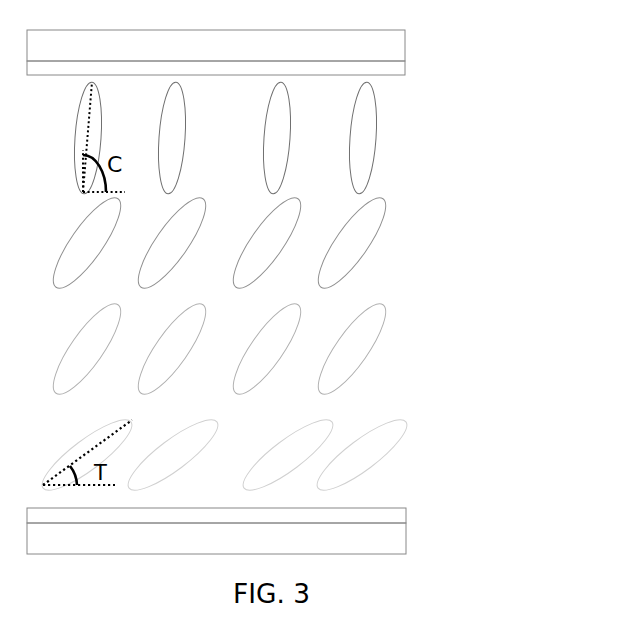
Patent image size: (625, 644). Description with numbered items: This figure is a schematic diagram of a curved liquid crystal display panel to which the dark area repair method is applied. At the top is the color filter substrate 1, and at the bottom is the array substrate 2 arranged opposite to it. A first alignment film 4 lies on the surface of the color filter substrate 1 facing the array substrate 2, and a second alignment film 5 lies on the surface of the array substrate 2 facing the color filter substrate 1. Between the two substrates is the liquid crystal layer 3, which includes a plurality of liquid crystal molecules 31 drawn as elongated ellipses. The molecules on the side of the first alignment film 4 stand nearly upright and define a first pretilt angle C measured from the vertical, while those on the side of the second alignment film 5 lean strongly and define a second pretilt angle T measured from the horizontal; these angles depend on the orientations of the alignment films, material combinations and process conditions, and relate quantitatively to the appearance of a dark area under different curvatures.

The color filter substrate 1 is at (380, 45).
The first alignment film 4 is at (380, 69).
The liquid crystal layer 3 is at (269, 290).
The liquid crystal molecules 31 is at (348, 250).
The second alignment film 5 is at (385, 515).
The array substrate 2 is at (385, 540).